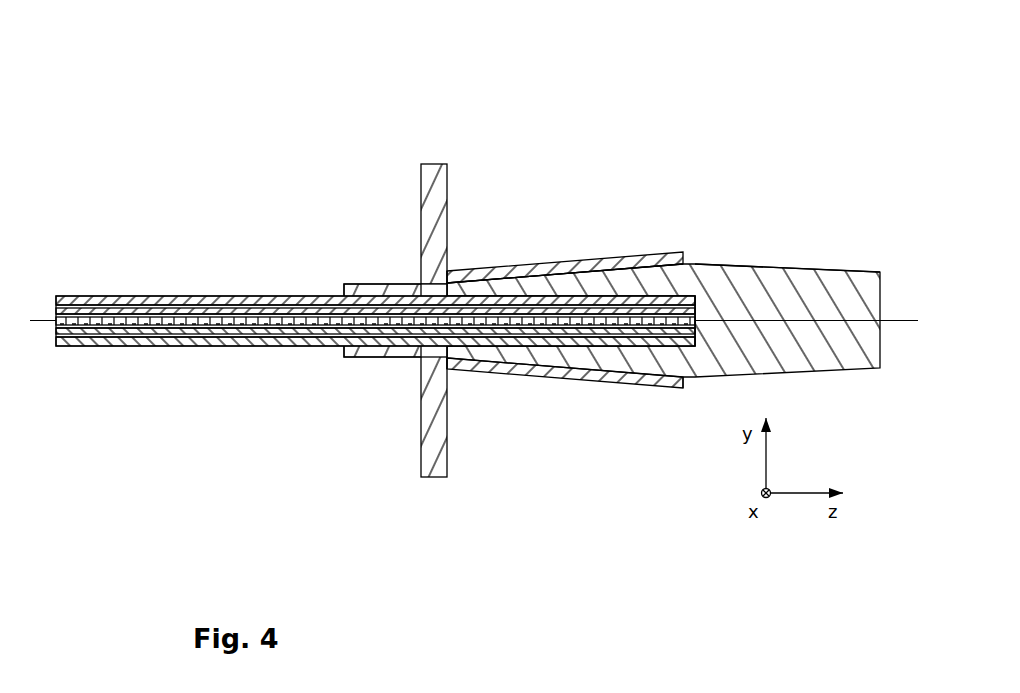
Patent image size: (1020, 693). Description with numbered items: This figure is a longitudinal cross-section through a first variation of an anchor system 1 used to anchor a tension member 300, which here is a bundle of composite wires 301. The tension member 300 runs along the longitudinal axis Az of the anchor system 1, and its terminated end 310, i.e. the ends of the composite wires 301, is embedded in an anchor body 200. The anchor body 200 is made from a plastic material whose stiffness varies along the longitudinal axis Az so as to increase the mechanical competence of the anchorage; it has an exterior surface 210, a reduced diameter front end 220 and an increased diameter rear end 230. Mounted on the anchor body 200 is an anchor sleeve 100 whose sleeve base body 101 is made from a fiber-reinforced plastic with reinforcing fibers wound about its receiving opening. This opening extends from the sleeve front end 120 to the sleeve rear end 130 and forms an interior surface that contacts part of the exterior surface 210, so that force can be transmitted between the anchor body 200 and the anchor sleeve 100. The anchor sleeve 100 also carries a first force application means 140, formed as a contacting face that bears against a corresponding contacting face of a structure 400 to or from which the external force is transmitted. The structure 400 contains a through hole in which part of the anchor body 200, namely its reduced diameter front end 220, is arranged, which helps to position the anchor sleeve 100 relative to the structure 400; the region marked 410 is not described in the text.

The anchor system 1 is at (474, 317).
The anchor sleeve 100 is at (465, 317).
The sleeve base body 101 is at (565, 158).
The sleeve front end 120 is at (496, 480).
The sleeve rear end 130 is at (723, 489).
The first force application means 140 is at (307, 158).
The anchor body 200 is at (678, 205).
The exterior surface 210 is at (663, 205).
The reduced diameter front end 220 is at (338, 443).
The increased diameter rear end 230 is at (802, 191).
The tension member 300 is at (366, 449).
The composite wires 301 is at (198, 340).
The terminated end 310 is at (645, 449).
The structure 400 is at (242, 255).
The flange opening 410 is at (242, 210).
The longitudinal axis Az is at (474, 254).